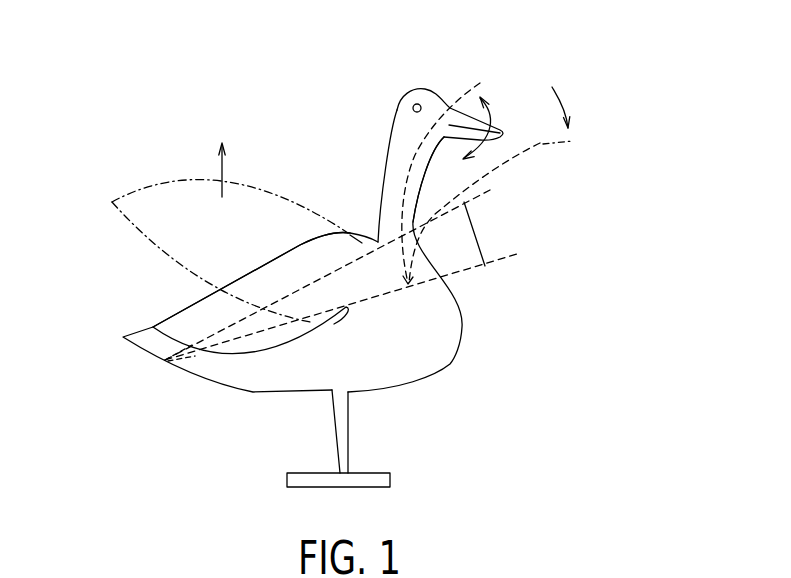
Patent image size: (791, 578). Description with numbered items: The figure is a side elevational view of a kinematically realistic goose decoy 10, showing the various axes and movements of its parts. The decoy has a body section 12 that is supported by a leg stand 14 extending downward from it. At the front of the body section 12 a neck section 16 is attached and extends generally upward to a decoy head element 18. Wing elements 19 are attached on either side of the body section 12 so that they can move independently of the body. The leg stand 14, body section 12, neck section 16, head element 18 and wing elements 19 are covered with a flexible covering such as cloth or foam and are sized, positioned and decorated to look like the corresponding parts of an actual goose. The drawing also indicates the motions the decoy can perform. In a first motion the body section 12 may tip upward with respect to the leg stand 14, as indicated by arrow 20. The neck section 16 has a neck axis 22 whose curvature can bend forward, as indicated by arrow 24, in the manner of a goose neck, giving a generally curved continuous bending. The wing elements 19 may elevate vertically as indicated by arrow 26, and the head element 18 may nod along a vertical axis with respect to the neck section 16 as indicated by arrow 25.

The kinematically realistic goose decoy 10 is at (270, 104).
The body section 12 is at (455, 368).
The leg stand 14 is at (357, 440).
The neck section 16 is at (374, 171).
The decoy head element 18 is at (395, 97).
The wing elements 19 is at (175, 243).
The arrow 20 is at (467, 209).
The neck axis 22 is at (468, 92).
The arrow 24 is at (561, 96).
The arrow 25 is at (487, 118).
The arrow 26 is at (220, 177).